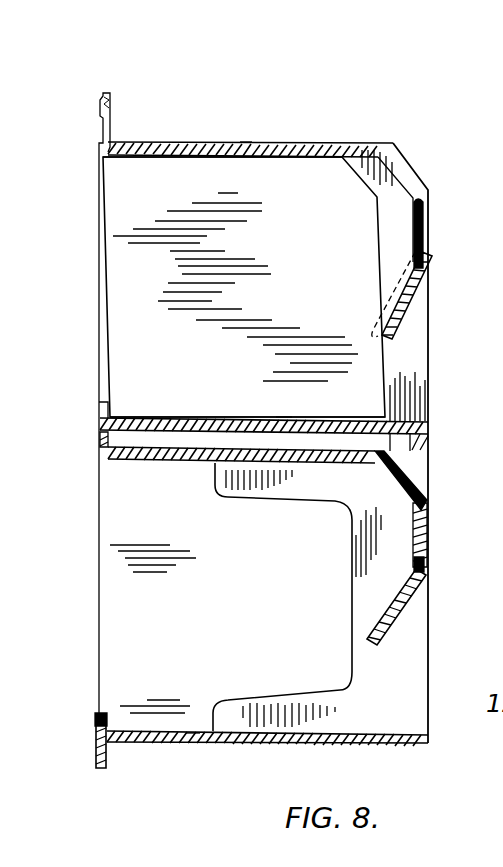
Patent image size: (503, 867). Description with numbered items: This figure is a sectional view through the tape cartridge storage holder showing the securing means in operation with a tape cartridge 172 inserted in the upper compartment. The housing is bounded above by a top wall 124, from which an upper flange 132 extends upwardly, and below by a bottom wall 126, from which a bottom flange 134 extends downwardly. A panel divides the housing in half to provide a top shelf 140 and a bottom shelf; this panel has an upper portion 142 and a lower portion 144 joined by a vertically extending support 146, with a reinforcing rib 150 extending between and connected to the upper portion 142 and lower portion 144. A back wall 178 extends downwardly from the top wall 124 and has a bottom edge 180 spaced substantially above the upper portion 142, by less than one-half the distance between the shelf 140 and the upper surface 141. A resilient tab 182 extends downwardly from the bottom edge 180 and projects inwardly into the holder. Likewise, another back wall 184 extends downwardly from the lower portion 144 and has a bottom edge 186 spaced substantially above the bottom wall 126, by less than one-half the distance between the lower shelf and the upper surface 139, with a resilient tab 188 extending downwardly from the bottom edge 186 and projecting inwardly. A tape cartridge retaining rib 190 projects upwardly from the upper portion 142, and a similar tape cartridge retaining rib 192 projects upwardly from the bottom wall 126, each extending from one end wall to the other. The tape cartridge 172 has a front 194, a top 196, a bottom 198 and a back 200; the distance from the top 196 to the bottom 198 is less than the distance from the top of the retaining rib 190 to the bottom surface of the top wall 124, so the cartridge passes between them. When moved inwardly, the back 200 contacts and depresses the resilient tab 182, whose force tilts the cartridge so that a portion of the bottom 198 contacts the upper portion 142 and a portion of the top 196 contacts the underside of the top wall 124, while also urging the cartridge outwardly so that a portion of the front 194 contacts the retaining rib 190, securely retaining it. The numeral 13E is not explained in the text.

The top wall 124 is at (330, 146).
The bottom wall 126 is at (404, 745).
The upper flange 132 is at (103, 103).
The bottom flange 134 is at (94, 756).
The upper surface 139 is at (180, 460).
The top shelf 140 is at (281, 416).
The upper surface 141 is at (244, 131).
The upper portion 142 is at (415, 423).
The lower portion 144 is at (317, 465).
The vertically extending support 146 is at (99, 434).
The reinforcing rib 150 is at (400, 450).
The tape cartridge 172 is at (312, 277).
The back wall 178 is at (430, 207).
The bottom edge 180 is at (430, 257).
The resilient tab 182 is at (413, 293).
The back wall 184 is at (421, 523).
The bottom edge 186 is at (421, 568).
The resilient tab 188 is at (405, 612).
The tape cartridge retaining rib 190 is at (99, 410).
The tape cartridge retaining rib 192 is at (95, 718).
The front 194 is at (99, 213).
The top 196 is at (135, 158).
The bottom 198 is at (182, 418).
The back 200 is at (385, 362).
The fastener 13E is at (187, 733).